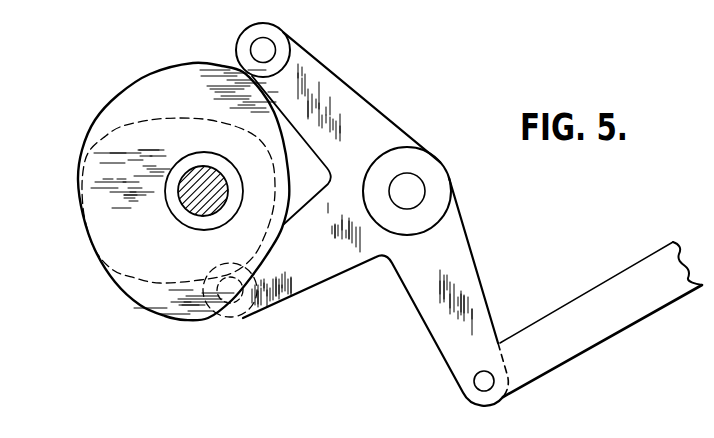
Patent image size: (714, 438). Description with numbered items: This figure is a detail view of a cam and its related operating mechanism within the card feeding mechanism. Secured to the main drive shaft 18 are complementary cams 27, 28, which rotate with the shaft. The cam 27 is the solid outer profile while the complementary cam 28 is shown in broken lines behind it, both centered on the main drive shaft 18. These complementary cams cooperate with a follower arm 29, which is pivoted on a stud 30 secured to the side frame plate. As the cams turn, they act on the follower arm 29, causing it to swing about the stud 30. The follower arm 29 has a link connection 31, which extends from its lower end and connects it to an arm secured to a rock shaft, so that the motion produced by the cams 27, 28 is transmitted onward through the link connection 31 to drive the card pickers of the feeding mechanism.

The main drive shaft 18 is at (195, 195).
The cam 27 is at (135, 93).
The cam 28 is at (82, 153).
The follower arm 29 is at (342, 91).
The stud 30 is at (407, 188).
The link connection 31 is at (565, 305).